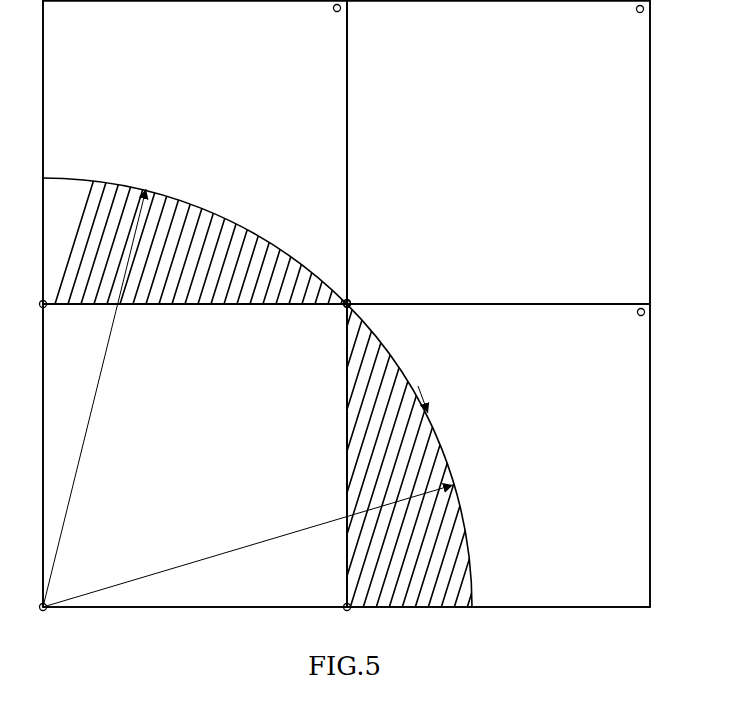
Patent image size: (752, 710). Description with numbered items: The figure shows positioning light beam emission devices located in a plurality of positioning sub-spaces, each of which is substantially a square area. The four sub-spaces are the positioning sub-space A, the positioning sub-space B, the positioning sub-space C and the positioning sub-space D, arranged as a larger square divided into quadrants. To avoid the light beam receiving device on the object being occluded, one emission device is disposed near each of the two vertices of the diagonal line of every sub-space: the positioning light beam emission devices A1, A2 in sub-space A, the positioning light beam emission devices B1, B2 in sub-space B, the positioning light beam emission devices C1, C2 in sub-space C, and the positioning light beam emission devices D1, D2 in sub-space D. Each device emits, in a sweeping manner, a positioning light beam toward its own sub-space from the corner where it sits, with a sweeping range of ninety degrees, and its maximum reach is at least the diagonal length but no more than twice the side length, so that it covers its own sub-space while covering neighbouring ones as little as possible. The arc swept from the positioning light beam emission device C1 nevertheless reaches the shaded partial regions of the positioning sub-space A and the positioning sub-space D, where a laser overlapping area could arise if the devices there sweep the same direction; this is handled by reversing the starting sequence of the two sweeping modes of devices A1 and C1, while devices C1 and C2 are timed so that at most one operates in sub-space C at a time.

The positioning sub-space A is at (195, 152).
The positioning sub-space B is at (498, 152).
The positioning sub-space C is at (195, 455).
The positioning sub-space D is at (498, 455).
The positioning light beam emission device A1 is at (69, 289).
The positioning light beam emission device A2 is at (314, 30).
The positioning light beam emission device B1 is at (374, 286).
The positioning light beam emission device B2 is at (622, 30).
The positioning light beam emission device C1 is at (70, 591).
The positioning light beam emission device C2 is at (323, 330).
The positioning light beam emission device D1 is at (376, 591).
The positioning light beam emission device D2 is at (624, 335).